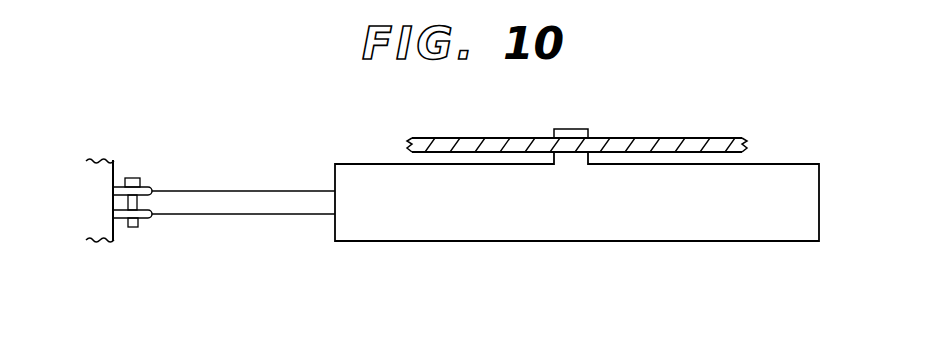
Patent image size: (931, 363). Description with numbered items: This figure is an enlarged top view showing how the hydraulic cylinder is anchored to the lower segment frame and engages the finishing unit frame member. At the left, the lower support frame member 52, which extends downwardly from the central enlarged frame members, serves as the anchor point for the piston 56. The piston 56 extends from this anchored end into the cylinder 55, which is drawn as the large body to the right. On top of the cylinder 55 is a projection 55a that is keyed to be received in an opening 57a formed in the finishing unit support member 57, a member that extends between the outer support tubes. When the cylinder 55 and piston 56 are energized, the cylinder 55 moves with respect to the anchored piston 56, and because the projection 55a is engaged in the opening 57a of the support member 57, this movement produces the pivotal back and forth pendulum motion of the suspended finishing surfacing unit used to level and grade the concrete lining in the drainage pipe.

The lower support frame member 52 is at (100, 204).
The cylinder 55 is at (423, 217).
The projection 55a is at (582, 129).
The piston 56 is at (227, 208).
The finishing unit support member 57 is at (658, 143).
The opening 57a is at (557, 145).